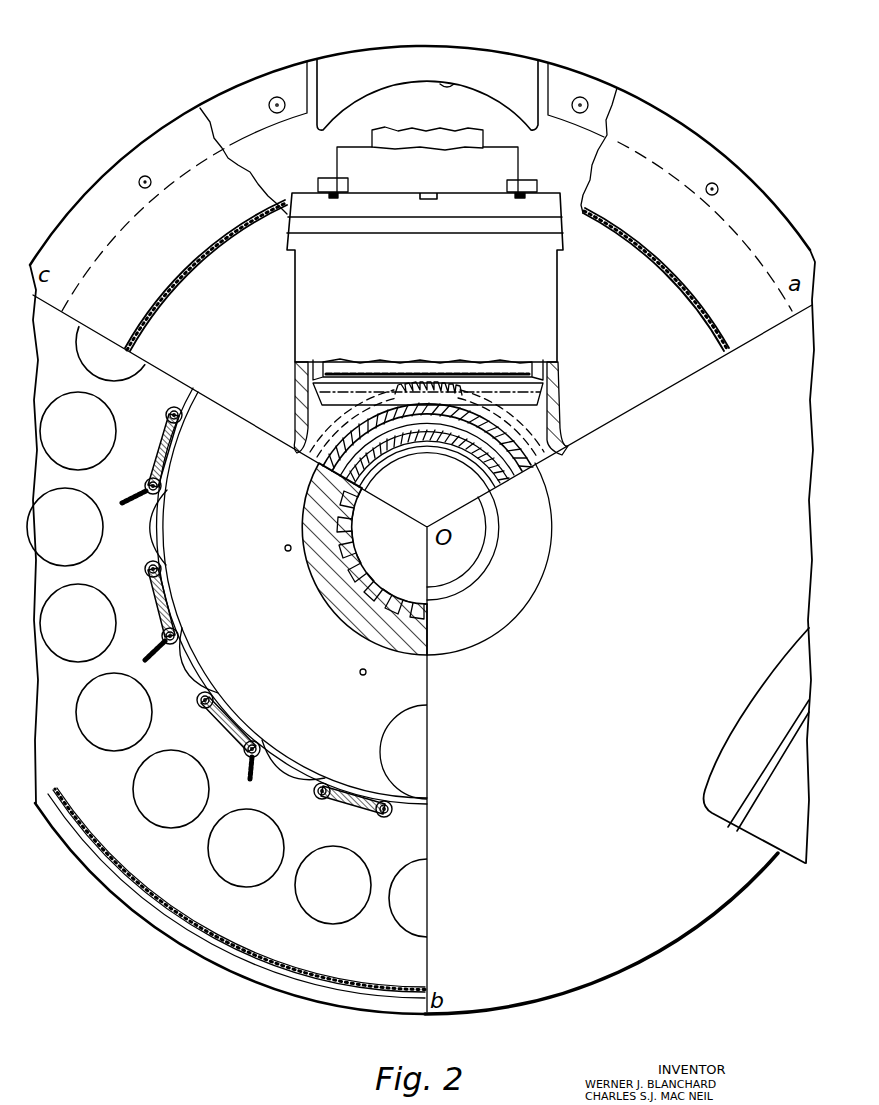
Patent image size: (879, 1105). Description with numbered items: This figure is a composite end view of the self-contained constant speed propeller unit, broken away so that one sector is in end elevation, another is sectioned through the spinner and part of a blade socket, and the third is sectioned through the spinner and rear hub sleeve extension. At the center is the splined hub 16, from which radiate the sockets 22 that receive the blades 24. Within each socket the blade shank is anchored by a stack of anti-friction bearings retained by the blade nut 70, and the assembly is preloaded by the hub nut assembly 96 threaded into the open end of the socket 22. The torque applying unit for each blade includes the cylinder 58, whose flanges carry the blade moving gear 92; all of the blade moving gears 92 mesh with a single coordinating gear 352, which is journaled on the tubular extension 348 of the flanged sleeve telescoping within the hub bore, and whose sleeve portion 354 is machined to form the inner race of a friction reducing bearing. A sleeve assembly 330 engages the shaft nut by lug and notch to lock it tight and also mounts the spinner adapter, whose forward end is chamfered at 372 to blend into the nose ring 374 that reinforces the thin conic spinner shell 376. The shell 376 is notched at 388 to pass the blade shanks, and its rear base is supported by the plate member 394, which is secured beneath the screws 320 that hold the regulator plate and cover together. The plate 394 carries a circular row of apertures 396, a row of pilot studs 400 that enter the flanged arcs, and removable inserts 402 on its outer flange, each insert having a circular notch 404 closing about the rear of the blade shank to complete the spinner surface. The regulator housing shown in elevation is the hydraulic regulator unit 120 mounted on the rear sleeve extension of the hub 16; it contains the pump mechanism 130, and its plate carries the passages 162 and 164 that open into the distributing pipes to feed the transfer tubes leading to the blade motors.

The hub 16 is at (320, 583).
The socket 22 is at (548, 307).
The blade 24 is at (513, 163).
The cylinder 58 is at (434, 135).
The blade nut 70 is at (340, 370).
The blade moving gear 92 is at (556, 378).
The hub nut assembly 96 is at (348, 186).
The hydraulic regulator unit 120 is at (412, 688).
The pump mechanism 130 is at (410, 750).
The passage 162 is at (361, 676).
The passage 164 is at (284, 550).
The screws 320 is at (255, 745).
The sleeve assembly 330 is at (500, 483).
The tubular extension 348 is at (520, 466).
The coordinating gear 352 is at (518, 424).
The sleeve portion 354 is at (514, 442).
The chamfer 372 is at (482, 560).
The nose ring 374 is at (507, 615).
The spinner shell 376 is at (178, 268).
The notch 388 is at (718, 815).
The plate member 394 is at (145, 880).
The apertures 396 is at (240, 883).
The pilot studs 400 is at (277, 97).
The removable inserts 402 is at (400, 58).
The circular notch 404 is at (447, 82).